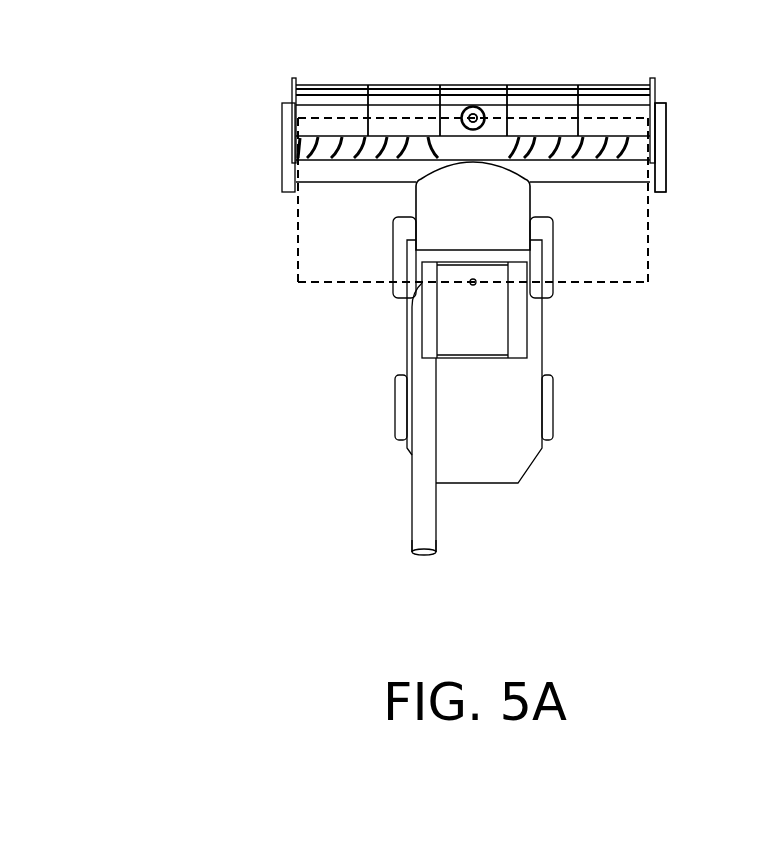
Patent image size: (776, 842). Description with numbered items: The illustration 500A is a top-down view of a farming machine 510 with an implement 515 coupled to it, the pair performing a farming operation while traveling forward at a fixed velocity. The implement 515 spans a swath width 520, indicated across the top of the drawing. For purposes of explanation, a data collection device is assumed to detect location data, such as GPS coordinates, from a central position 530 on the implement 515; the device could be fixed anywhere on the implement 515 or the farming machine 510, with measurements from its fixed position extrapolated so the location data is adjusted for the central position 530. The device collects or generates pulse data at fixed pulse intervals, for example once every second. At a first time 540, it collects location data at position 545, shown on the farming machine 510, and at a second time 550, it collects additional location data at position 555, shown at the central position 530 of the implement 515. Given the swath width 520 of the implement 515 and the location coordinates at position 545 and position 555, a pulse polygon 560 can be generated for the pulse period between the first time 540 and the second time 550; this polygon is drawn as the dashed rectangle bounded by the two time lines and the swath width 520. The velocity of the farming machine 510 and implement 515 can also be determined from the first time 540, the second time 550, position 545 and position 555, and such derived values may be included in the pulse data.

The swath width 520 is at (298, 53).
The implement 515 is at (669, 140).
The central position 530 is at (471, 107).
The position 555 is at (480, 110).
The second time t2 550 is at (277, 118).
The first time t1 540 is at (277, 282).
The pulse polygon 560 is at (620, 285).
The farming machine 510 is at (383, 348).
The position 545 is at (478, 290).
The illustration 500A is at (371, 576).